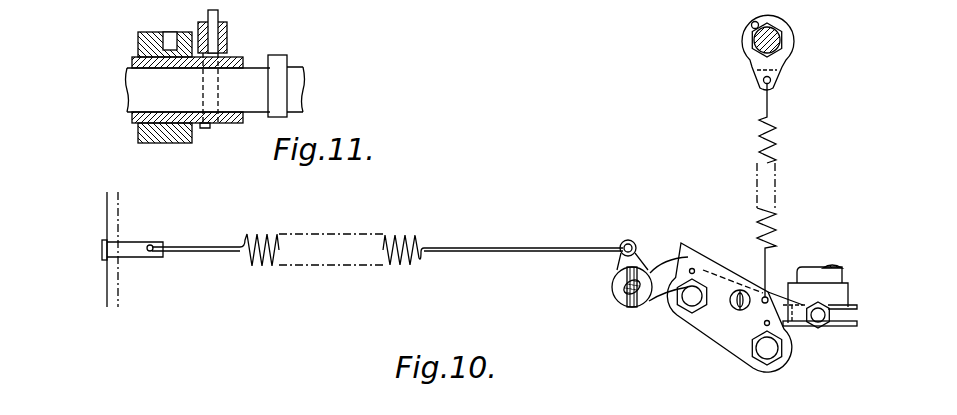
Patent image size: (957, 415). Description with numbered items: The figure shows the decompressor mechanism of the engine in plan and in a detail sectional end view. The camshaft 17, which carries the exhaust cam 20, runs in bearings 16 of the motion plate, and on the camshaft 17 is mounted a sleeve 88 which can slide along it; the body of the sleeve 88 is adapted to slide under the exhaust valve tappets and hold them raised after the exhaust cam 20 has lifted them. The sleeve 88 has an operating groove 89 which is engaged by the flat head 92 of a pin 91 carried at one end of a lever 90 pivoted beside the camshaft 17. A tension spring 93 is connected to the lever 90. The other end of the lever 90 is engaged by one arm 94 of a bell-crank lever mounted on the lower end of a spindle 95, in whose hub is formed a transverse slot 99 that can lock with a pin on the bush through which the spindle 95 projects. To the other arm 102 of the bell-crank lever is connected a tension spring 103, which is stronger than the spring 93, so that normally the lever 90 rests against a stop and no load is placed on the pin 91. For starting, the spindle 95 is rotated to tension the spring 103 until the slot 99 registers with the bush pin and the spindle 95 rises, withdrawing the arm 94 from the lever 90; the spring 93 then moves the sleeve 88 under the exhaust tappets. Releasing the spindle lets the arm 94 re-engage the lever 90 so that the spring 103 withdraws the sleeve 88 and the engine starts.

In FIG. 11, the bearings 16 is at (161, 31).
In FIG. 11, the camshaft 17 is at (301, 68).
In FIG. 10, the camshaft 17 is at (827, 264).
In FIG. 11, the exhaust cam 20 is at (283, 55).
In FIG. 11, the sleeve 88 is at (233, 124).
In FIG. 10, the sleeve 88 is at (850, 281).
In FIG. 11, the operating groove 89 is at (206, 130).
In FIG. 10, the operating groove 89 is at (837, 328).
In FIG. 10, the lever 90 is at (727, 267).
In FIG. 11, the pin 91 is at (222, 33).
In FIG. 11, the flat head 92 is at (223, 53).
In FIG. 10, the tension spring 93 is at (755, 130).
In FIG. 10, the arm 94 is at (653, 262).
In FIG. 10, the spindle 95 is at (617, 284).
In FIG. 10, the transverse slot 99 is at (627, 306).
In FIG. 10, the arm 102 is at (634, 242).
In FIG. 10, the tension spring 103 is at (408, 232).